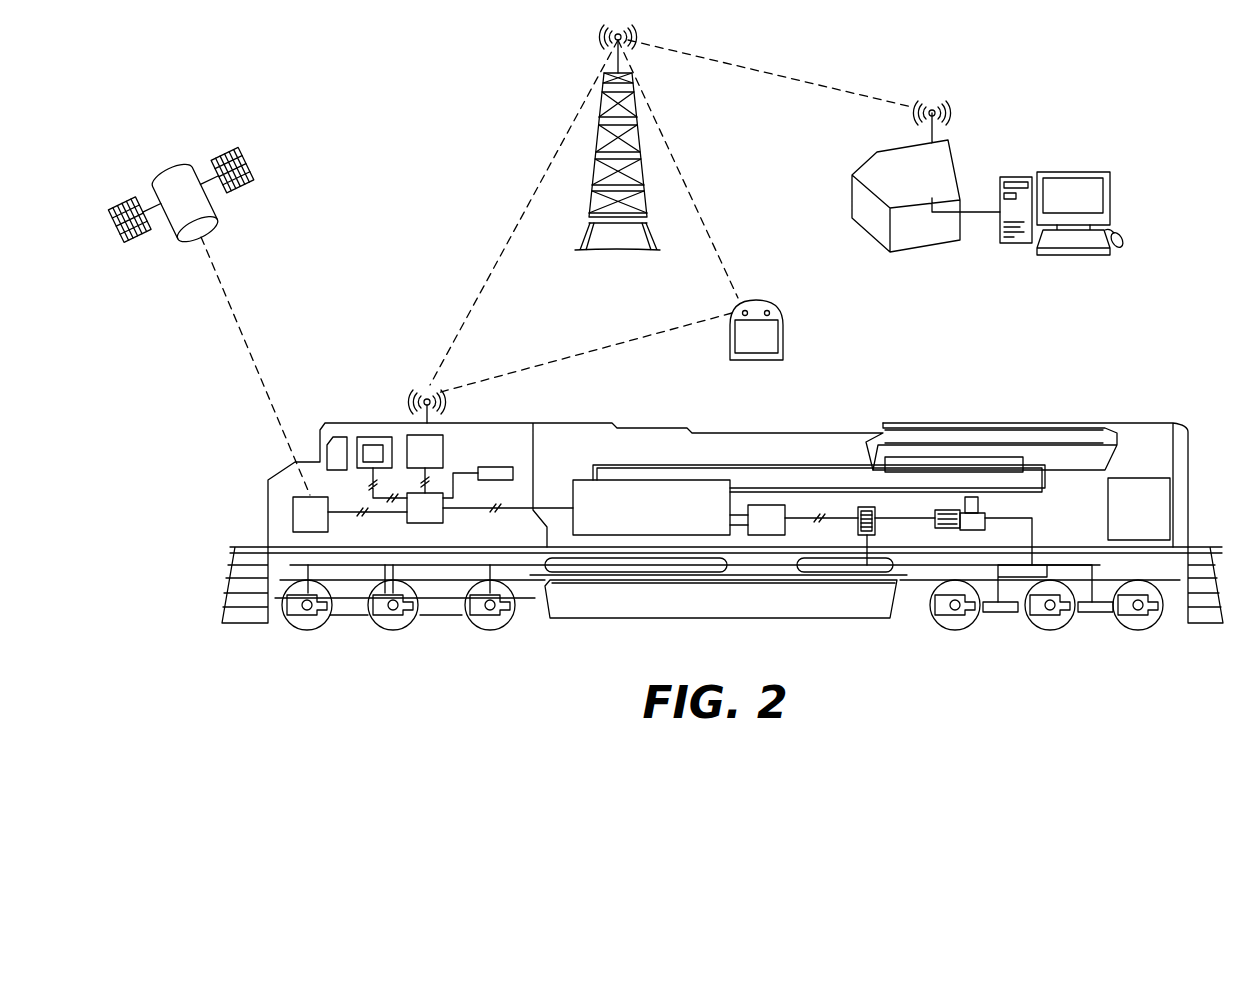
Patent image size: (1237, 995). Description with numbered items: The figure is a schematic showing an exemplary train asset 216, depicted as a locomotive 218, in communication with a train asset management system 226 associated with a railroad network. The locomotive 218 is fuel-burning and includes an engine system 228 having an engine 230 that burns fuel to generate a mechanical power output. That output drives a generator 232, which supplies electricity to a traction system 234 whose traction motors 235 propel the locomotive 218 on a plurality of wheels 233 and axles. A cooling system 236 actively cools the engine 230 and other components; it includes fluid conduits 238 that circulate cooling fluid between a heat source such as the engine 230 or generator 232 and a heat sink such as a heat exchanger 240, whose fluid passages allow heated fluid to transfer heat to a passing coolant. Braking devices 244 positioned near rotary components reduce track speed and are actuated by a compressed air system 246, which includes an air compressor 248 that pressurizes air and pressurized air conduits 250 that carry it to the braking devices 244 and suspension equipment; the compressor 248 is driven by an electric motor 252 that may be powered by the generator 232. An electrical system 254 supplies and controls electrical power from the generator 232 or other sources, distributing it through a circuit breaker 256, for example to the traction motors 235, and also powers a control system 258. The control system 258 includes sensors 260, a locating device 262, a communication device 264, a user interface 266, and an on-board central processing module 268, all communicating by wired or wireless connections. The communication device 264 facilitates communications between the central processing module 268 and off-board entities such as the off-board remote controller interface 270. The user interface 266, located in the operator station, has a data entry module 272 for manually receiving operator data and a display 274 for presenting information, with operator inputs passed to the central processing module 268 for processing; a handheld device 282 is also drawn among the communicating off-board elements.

The train asset 216 is at (190, 511).
The locomotive 218 is at (267, 517).
The train asset management system 226 is at (426, 176).
The engine system 228 is at (644, 462).
The engine 230 is at (651, 507).
The generator 232 is at (757, 520).
The wheels 233 is at (1138, 612).
The traction system 234 is at (721, 681).
The traction motors 235 is at (490, 612).
The cooling system 236 is at (992, 408).
The fluid conduits 238 is at (753, 463).
The heat exchanger 240 is at (934, 457).
The braking devices 244 is at (1092, 613).
The compressed air system 246 is at (989, 523).
The air compressor 248 is at (964, 529).
The pressurized air conduits 250 is at (1032, 532).
The electric motor 252 is at (971, 496).
The electrical system 254 is at (843, 507).
The circuit breaker 256 is at (861, 534).
The control system 258 is at (420, 420).
The sensors 260 is at (492, 466).
The locating device 262 is at (350, 514).
The communication device 264 is at (425, 464).
The user interface 266 is at (385, 388).
The on-board central processing module 268 is at (471, 495).
The off-board remote controller interface 270 is at (1005, 123).
The data entry module 272 is at (365, 441).
The display 274 is at (384, 437).
The handheld device 282 is at (785, 338).